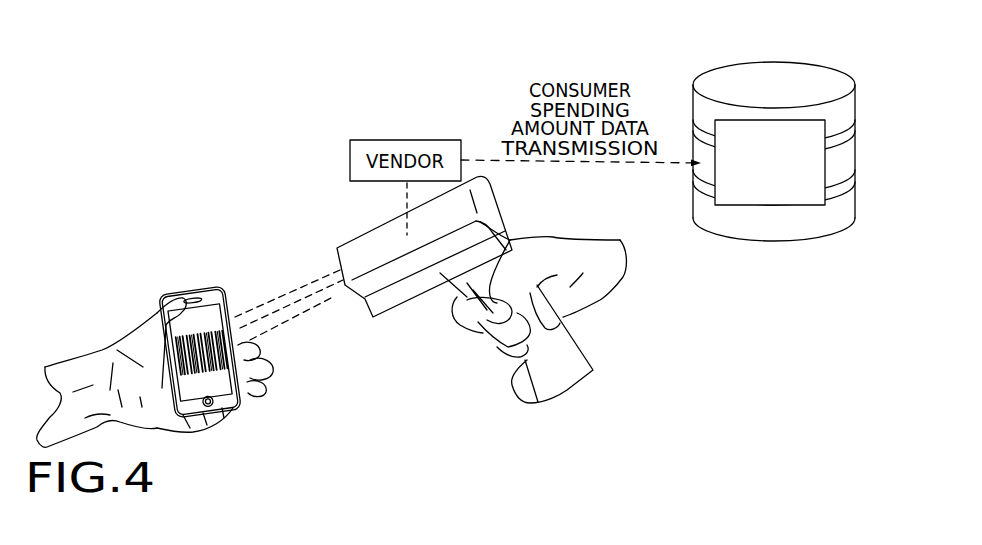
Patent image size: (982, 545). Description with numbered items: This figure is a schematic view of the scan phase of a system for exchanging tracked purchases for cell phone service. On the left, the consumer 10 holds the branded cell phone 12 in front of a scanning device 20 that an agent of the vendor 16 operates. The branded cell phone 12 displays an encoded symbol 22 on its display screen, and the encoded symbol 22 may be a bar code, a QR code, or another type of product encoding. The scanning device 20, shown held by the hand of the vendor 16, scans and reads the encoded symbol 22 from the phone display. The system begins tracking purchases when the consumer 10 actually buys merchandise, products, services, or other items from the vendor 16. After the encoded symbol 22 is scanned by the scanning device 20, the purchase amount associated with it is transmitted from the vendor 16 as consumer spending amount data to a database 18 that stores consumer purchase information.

The consumer 10 is at (102, 350).
The branded cell phone 12 is at (180, 290).
The encoded symbol 22 is at (250, 392).
The scanning device 20 is at (347, 241).
The vendor 16 is at (562, 236).
The database 18 is at (784, 60).